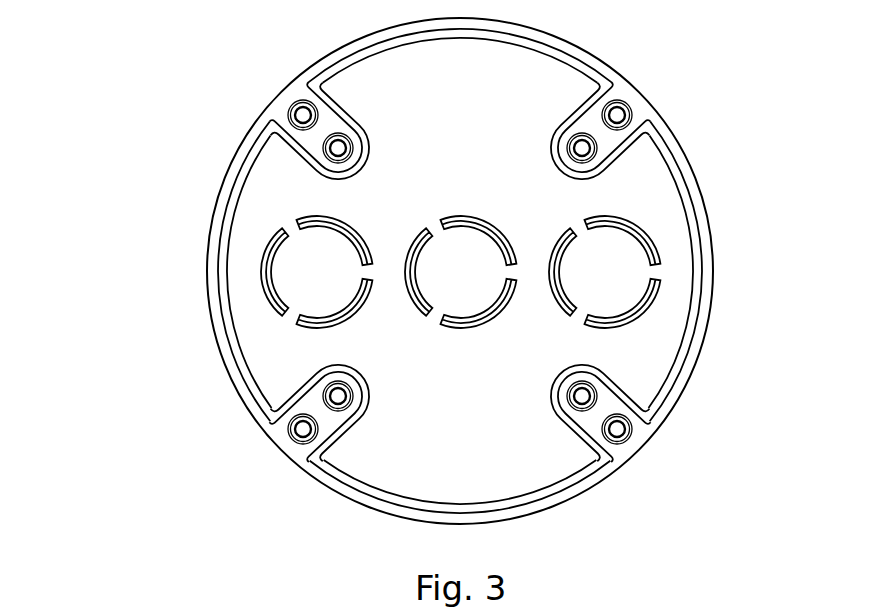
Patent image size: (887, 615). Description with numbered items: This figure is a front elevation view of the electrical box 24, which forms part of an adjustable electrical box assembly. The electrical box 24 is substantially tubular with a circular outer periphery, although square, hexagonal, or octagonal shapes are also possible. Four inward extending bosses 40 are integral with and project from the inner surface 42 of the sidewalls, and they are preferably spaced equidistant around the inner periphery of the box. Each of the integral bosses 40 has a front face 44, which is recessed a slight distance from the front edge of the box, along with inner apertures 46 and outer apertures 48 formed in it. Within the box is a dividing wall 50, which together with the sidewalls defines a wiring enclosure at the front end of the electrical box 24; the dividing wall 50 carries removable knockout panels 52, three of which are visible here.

The electrical box 24 is at (126, 114).
The inward extending bosses 40 is at (553, 158).
The inner surface 42 is at (460, 50).
The front face 44 is at (595, 417).
The inner apertures 46 is at (340, 397).
The outer apertures 48 is at (307, 432).
The dividing wall 50 is at (494, 376).
The removable knockout panels 52 is at (305, 284).